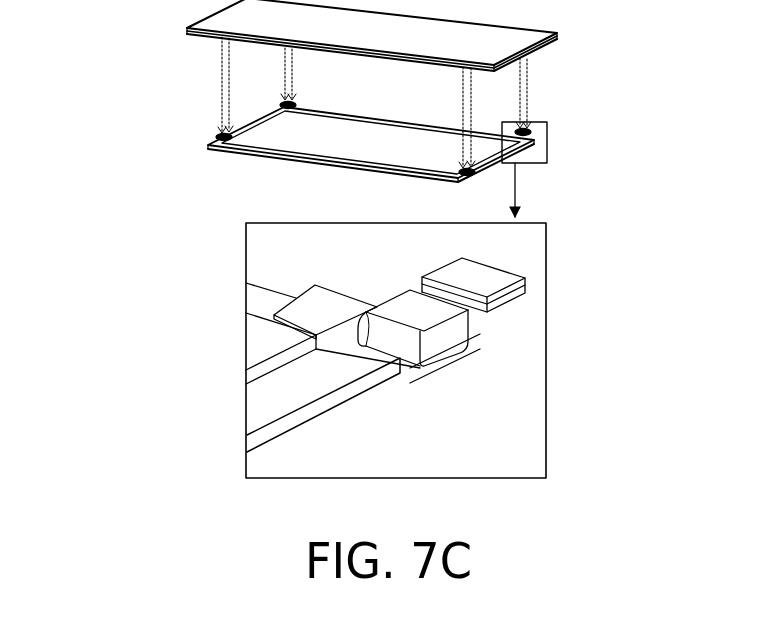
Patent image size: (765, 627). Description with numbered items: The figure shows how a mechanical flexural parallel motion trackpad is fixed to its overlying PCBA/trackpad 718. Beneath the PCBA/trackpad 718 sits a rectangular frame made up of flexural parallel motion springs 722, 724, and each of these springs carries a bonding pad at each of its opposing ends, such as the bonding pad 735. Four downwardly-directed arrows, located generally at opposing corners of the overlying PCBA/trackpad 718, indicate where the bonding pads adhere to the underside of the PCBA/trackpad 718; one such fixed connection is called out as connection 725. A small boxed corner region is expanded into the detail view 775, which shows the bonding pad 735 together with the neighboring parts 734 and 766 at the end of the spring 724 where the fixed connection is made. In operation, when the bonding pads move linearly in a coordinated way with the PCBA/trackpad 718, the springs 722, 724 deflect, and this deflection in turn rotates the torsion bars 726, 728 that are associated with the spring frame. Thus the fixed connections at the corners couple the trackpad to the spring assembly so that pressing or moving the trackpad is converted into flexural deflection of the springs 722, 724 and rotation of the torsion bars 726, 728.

The PCBA/trackpad 718 is at (375, 41).
The flexural parallel motion spring 722 is at (219, 134).
The flexural parallel motion spring 724 is at (455, 147).
The connection 725 is at (532, 82).
The torsion bar 726 is at (261, 296).
The torsion bar 728 is at (290, 158).
The flexible plate / flap 734 is at (316, 310).
The bonding pad 735 is at (453, 269).
The support block 766 is at (262, 346).
The detail view 775 is at (556, 134).